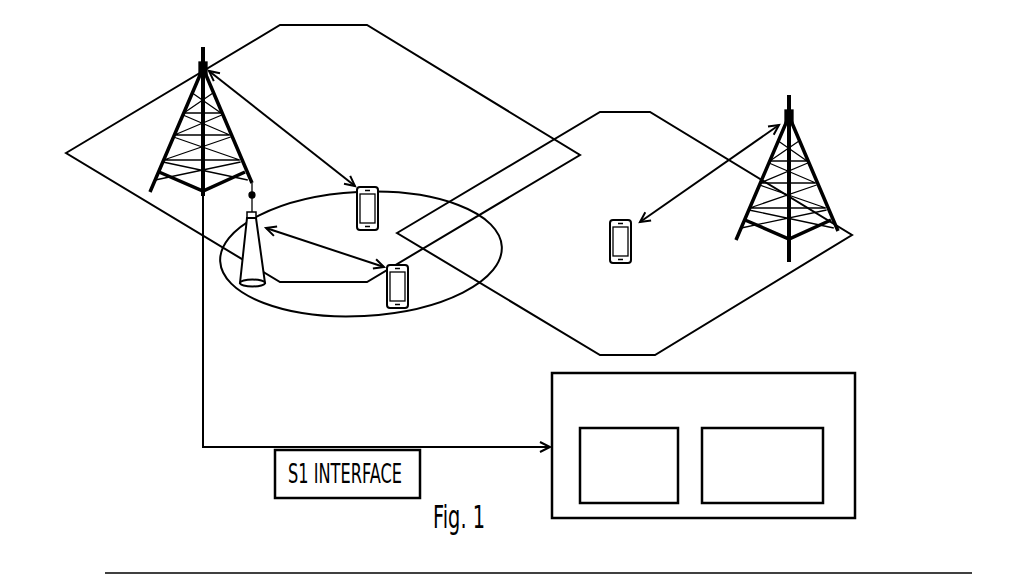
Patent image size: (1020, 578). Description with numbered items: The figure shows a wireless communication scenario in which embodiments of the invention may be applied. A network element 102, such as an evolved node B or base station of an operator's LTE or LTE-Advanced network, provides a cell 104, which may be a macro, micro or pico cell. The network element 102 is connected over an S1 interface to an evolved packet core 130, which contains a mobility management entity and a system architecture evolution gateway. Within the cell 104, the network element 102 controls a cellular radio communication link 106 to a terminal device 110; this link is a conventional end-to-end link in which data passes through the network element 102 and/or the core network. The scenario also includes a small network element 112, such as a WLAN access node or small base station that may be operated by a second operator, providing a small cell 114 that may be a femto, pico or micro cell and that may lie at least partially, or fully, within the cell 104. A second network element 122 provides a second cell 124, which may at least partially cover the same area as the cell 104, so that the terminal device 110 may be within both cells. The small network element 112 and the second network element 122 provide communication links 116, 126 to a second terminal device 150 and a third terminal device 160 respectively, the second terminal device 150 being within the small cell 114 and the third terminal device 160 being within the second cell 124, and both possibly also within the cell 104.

The network element 102 is at (173, 150).
The cell 104 is at (65, 155).
The cellular radio communication link 106 is at (281, 133).
The terminal device 110 is at (367, 188).
The small network element 112 is at (237, 238).
The small cell 114 is at (362, 316).
The communication link 116 is at (325, 245).
The second network element 122 is at (817, 193).
The second cell 124 is at (650, 112).
The communication link 126 is at (670, 202).
The evolved packet core 130 is at (703, 445).
The second terminal device 150 is at (408, 288).
The third terminal device 160 is at (610, 240).